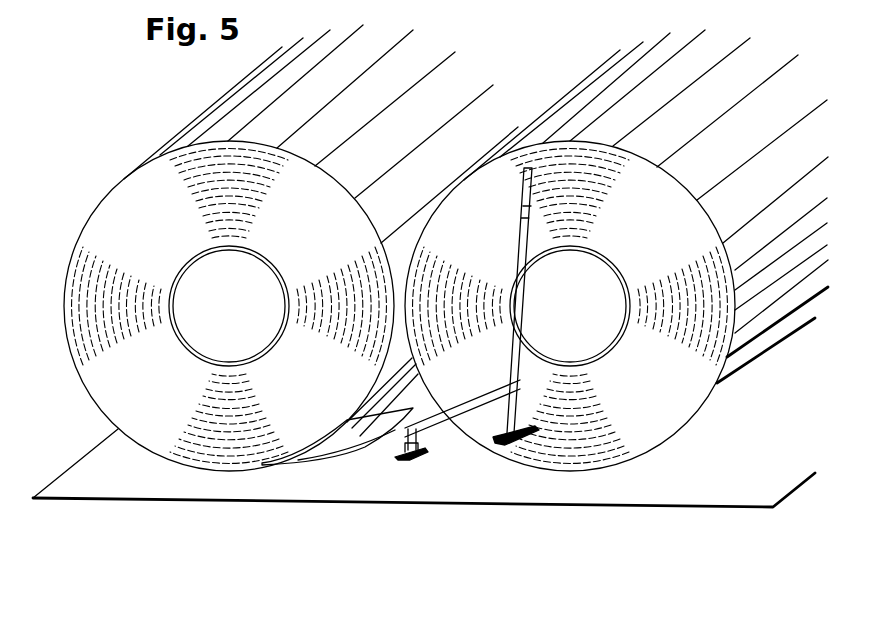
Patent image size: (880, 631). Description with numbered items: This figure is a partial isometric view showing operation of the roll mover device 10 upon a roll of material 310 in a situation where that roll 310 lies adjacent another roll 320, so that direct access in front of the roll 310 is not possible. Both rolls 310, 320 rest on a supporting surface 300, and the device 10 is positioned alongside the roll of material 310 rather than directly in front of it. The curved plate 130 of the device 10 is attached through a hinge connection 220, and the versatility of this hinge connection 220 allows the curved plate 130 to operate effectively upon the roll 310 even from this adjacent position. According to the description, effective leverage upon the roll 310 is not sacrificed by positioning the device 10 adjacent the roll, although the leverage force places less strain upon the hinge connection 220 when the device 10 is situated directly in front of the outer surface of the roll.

The roll mover device 10 is at (452, 443).
The curved plate 130 is at (345, 440).
The hinge connection 220 is at (377, 440).
The floor 300 is at (672, 482).
The roll of material 310 is at (148, 197).
The another roll 320 is at (657, 398).